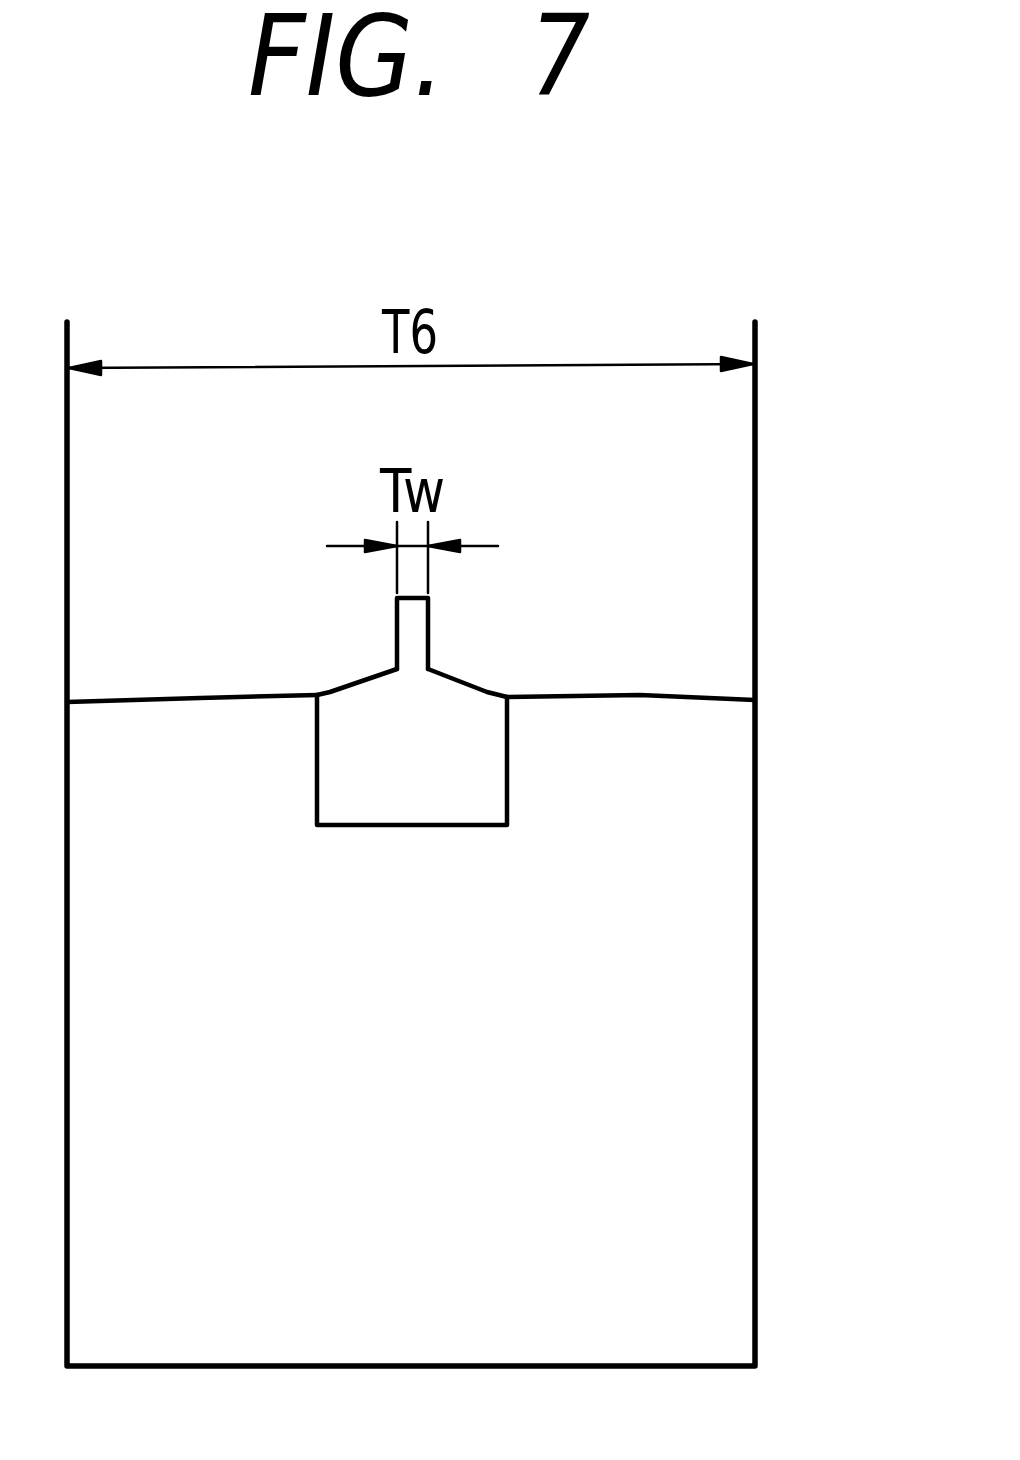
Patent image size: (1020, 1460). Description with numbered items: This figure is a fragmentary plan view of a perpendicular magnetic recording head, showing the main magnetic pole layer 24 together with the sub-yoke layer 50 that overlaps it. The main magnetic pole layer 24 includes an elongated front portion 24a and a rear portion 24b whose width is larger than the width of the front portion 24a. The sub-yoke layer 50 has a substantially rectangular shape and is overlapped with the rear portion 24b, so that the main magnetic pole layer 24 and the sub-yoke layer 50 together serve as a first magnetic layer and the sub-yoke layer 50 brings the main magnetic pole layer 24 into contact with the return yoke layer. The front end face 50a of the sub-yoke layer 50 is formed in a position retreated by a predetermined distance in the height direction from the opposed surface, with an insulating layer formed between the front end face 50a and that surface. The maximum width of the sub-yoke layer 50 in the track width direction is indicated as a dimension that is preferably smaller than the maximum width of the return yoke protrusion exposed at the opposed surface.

The main magnetic pole layer 24 is at (473, 727).
The front portion 24a is at (425, 627).
The rear portion 24b is at (470, 768).
The sub-yoke layer 50 is at (758, 940).
The front end face 50a is at (190, 697).